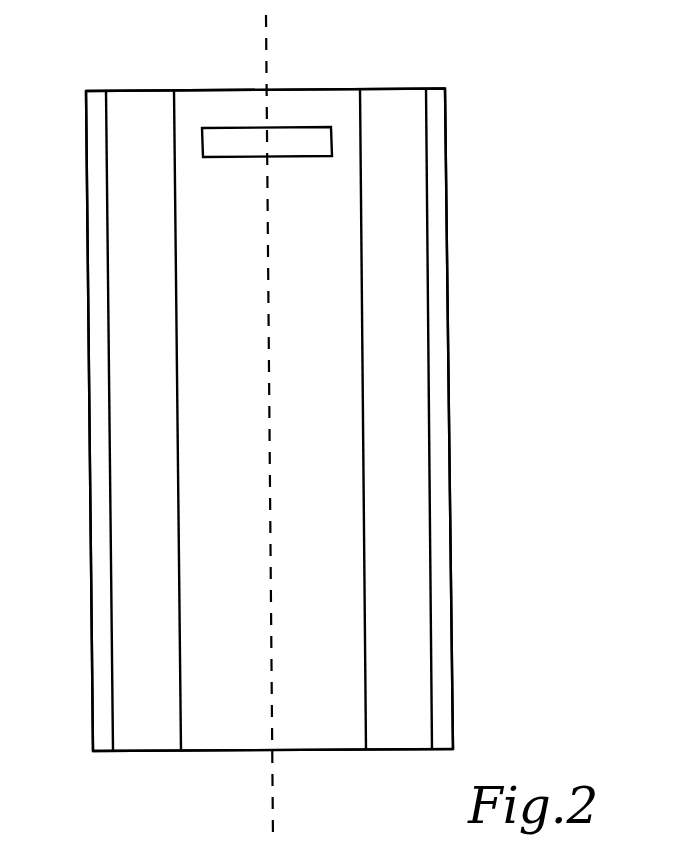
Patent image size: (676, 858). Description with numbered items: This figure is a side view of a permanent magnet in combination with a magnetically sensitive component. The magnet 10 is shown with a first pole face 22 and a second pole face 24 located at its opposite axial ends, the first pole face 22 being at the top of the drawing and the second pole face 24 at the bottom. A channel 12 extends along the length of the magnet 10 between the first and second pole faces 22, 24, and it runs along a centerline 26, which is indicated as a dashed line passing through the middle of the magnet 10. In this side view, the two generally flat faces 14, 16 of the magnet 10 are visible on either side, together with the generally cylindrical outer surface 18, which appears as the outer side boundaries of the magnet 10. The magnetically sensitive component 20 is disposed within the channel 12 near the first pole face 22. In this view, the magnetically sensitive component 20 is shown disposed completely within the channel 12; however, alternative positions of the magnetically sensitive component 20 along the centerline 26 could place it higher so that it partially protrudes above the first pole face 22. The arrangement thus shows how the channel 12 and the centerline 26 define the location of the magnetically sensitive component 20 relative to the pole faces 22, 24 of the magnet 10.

The magnet 10 is at (153, 110).
The channel 12 is at (322, 722).
The generally flat face 14 is at (125, 251).
The generally flat face 16 is at (394, 169).
The generally cylindrical outer surface 18 is at (86, 495).
The magnetically sensitive component 20 is at (303, 135).
The first pole face 22 is at (135, 90).
The second pole face 24 is at (133, 751).
The centerline 26 is at (273, 798).